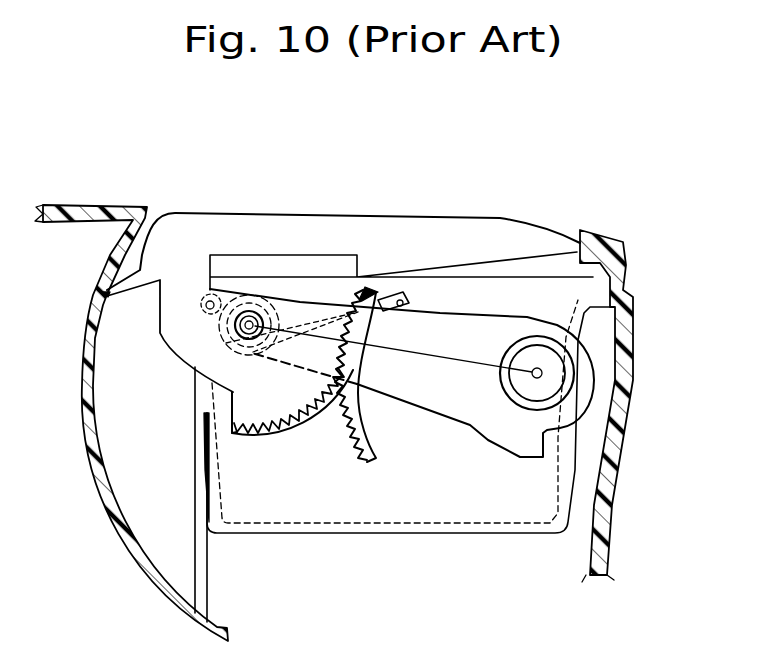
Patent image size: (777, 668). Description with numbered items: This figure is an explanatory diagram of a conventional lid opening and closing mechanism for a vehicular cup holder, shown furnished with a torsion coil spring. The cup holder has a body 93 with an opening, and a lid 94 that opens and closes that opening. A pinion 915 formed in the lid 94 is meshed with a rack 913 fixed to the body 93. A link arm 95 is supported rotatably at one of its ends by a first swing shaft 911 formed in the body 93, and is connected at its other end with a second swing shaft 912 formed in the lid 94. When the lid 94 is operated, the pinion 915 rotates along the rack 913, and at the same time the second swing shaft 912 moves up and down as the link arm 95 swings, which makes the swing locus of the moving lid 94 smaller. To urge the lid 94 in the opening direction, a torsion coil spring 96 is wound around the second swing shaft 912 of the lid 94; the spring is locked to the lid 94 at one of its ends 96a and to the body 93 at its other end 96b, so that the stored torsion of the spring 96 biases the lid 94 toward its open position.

The body 93 is at (550, 527).
The lid 94 is at (327, 230).
The link arm 95 is at (435, 330).
The torsion coil spring 96 is at (250, 318).
The one end of the torsion coil spring 96a is at (207, 300).
The other end of the torsion coil spring 96b is at (400, 293).
The first swing shaft 911 is at (537, 370).
The second swing shaft 912 is at (249, 318).
The rack 913 is at (370, 430).
The pinion 915 is at (262, 437).